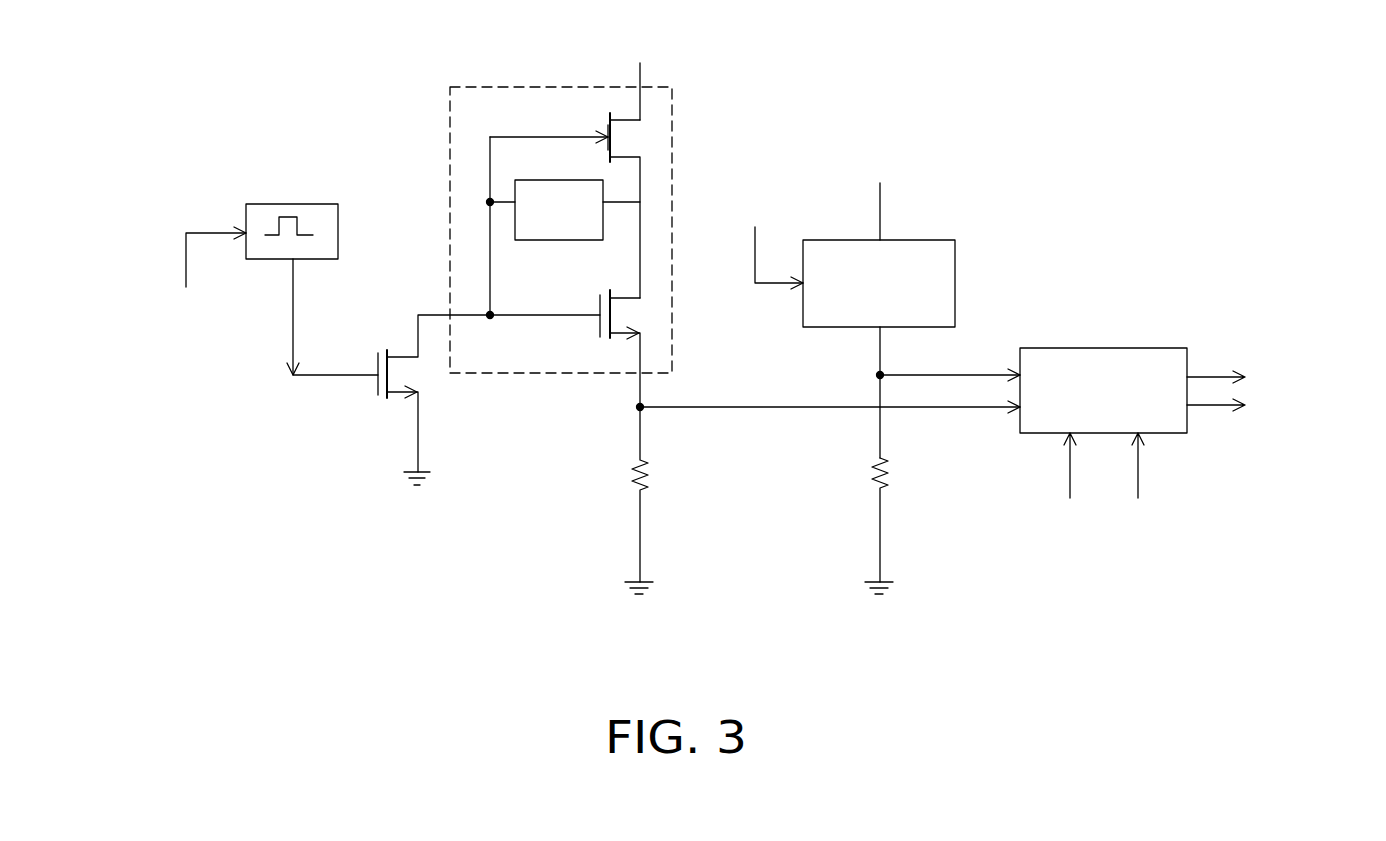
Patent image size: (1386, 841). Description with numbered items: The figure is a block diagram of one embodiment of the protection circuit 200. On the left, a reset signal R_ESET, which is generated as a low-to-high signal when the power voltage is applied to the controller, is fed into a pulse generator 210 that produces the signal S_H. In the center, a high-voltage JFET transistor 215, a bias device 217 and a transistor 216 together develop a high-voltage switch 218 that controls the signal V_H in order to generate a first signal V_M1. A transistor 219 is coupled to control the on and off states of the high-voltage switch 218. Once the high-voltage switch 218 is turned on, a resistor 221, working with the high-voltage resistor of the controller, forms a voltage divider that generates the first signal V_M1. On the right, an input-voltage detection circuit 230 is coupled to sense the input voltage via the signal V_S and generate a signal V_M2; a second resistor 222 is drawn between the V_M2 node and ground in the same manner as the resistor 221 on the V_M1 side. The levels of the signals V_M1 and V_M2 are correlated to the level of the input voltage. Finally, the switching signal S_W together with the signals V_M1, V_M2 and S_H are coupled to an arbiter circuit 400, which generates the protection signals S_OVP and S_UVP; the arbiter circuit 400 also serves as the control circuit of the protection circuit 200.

The protection circuit 200 is at (1250, 72).
The pulse generator 210 is at (293, 204).
The high-voltage JFET transistor 215 is at (625, 119).
The transistor 216 is at (625, 297).
The bias device 217 is at (573, 180).
The high-voltage switch 218 is at (672, 113).
The transistor 219 is at (403, 353).
The resistor 221 is at (633, 462).
The second resistor 222 is at (872, 462).
The input-voltage detection circuit 230 is at (922, 240).
The arbiter circuit 400 is at (1103, 348).